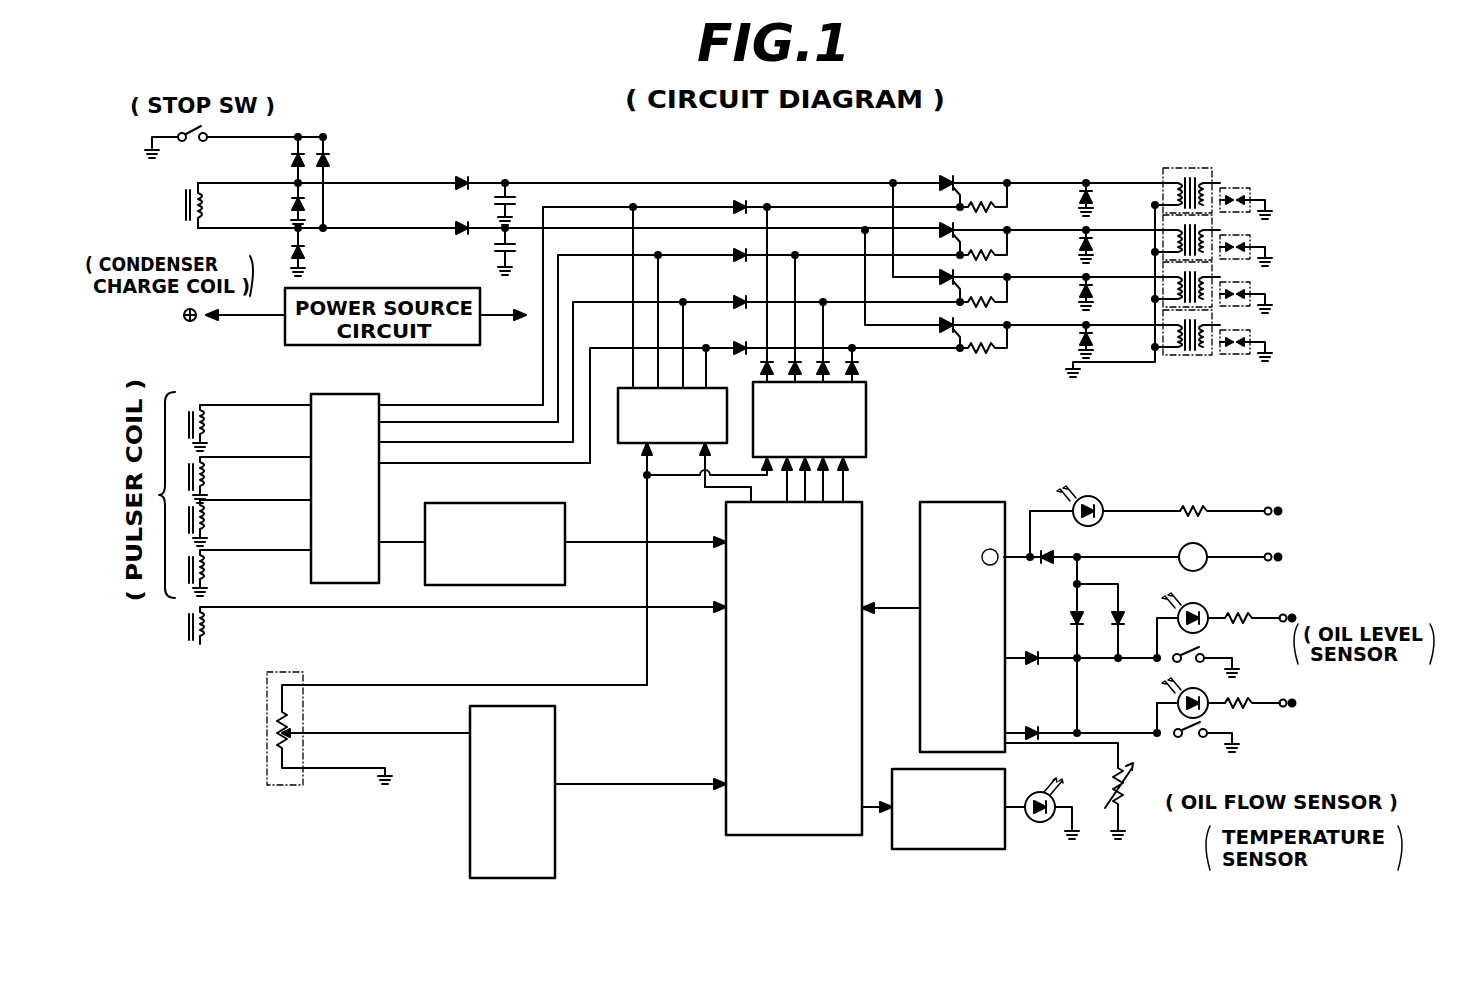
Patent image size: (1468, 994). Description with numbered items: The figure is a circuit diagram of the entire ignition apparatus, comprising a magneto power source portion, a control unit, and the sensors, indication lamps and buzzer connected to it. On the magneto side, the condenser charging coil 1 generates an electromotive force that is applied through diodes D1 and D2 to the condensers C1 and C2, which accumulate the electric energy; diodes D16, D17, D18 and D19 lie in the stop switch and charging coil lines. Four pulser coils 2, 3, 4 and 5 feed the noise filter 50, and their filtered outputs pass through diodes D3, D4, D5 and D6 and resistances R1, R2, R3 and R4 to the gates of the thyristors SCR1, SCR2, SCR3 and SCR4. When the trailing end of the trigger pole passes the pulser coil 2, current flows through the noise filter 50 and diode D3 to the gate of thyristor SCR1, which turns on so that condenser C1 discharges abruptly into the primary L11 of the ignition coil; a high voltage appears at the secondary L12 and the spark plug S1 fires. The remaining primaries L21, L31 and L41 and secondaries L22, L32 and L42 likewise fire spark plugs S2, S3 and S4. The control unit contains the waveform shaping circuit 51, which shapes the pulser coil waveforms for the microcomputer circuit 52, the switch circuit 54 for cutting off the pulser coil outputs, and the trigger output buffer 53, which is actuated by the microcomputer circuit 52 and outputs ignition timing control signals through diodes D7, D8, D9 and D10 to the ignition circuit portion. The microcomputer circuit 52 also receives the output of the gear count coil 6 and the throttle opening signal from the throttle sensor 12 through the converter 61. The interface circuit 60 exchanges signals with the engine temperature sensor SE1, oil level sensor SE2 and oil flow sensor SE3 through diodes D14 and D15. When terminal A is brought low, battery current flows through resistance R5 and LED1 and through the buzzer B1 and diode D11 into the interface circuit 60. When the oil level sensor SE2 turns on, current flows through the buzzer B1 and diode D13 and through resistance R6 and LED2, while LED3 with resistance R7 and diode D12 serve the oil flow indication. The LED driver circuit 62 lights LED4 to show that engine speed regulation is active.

The condenser charging coil 1 is at (193, 213).
The pulser coil 2 is at (212, 424).
The pulser coil 3 is at (212, 476).
The pulser coil 4 is at (212, 519).
The pulser coil 5 is at (212, 569).
The gear count coil 6 is at (212, 627).
The throttle sensor 12 is at (305, 673).
The noise filter 50 is at (381, 500).
The waveform shaping circuit 51 is at (522, 503).
The microcomputer circuit 52 is at (722, 724).
The trigger output buffer 53 is at (868, 420).
The switch circuit 54 is at (630, 445).
The interface circuit 60 is at (918, 710).
The A/D converter 61 is at (557, 838).
The LED driver circuit 62 is at (960, 850).
The diode D1 is at (460, 175).
The diode D2 is at (462, 226).
The diode D3 is at (736, 201).
The diode D4 is at (736, 253).
The diode D5 is at (736, 297).
The diode D6 is at (736, 342).
The diode D7 is at (771, 355).
The diode D8 is at (798, 355).
The diode D9 is at (828, 355).
The diode D10 is at (860, 366).
The diode D11 is at (1078, 197).
The diode D12 is at (1078, 244).
The diode D13 is at (1078, 291).
The diode D14 is at (1078, 339).
The diode D15 is at (1038, 730).
The diode D16 is at (290, 160).
The diode D17 is at (332, 160).
The diode D18 is at (290, 207).
The diode D19 is at (305, 250).
The condenser C1 is at (511, 190).
The condenser C2 is at (499, 251).
The resistance R1 is at (985, 213).
The resistance R2 is at (985, 262).
The resistance R3 is at (985, 309).
The resistance R4 is at (985, 358).
The resistance R5 is at (1192, 509).
The resistance R6 is at (1245, 611).
The resistance R7 is at (1236, 702).
The thyristor SCR1 is at (943, 175).
The thyristor SCR2 is at (940, 230).
The thyristor SCR3 is at (942, 286).
The thyristor SCR4 is at (940, 322).
The primary of ignition coil L11 is at (1160, 195).
The secondary of ignition coil L12 is at (1202, 189).
The primary of ignition coil L21 is at (1160, 242).
The secondary of ignition coil L22 is at (1206, 236).
The primary of ignition coil L31 is at (1160, 289).
The secondary of ignition coil L32 is at (1206, 284).
The primary of ignition coil L41 is at (1160, 337).
The secondary of ignition coil L42 is at (1206, 332).
The spark plug S1 is at (1252, 198).
The spark plug S2 is at (1252, 255).
The spark plug S3 is at (1252, 305).
The spark plug S4 is at (1252, 353).
The LED LED1 is at (1091, 496).
The LED LED2 is at (1210, 598).
The LED LED3 is at (1172, 700).
The LED LED4 is at (1040, 823).
The buzzer B1 is at (1206, 550).
The engine temperature sensor SE1 is at (1128, 813).
The oil level sensor SE2 is at (1220, 652).
The oil flow sensor SE3 is at (1188, 722).